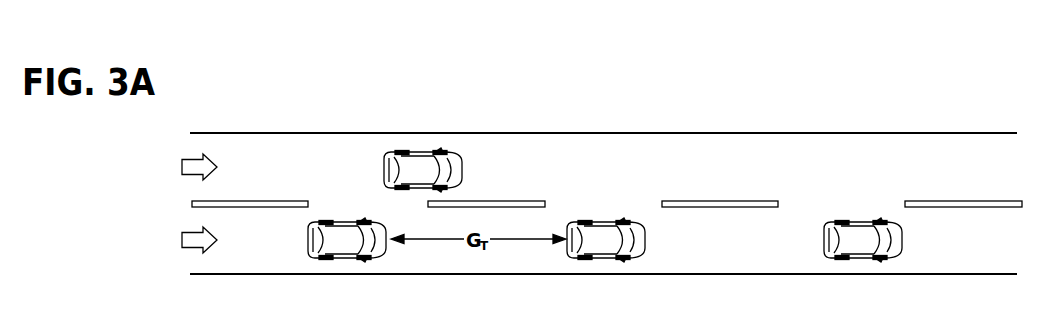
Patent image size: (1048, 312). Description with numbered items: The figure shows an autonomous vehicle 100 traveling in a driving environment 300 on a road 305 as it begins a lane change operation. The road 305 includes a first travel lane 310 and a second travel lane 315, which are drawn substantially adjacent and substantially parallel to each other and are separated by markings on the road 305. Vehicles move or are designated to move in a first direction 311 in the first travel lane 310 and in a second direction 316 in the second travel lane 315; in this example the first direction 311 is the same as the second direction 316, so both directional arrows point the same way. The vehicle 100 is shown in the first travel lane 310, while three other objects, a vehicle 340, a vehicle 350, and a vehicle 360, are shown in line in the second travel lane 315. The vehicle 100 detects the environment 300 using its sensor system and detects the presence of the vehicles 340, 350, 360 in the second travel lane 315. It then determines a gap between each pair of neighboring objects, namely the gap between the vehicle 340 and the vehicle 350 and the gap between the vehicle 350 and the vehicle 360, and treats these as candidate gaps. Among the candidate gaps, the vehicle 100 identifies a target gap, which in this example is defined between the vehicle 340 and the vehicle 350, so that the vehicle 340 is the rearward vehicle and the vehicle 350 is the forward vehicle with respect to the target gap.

The driving environment 300 is at (1008, 123).
The road 305 is at (202, 115).
The first travel lane 310 is at (291, 178).
The first direction 311 is at (182, 166).
The second travel lane 315 is at (292, 247).
The second direction 316 is at (182, 239).
The vehicle 100 is at (412, 152).
The vehicle 340 is at (319, 257).
The vehicle 350 is at (596, 257).
The vehicle 360 is at (873, 257).